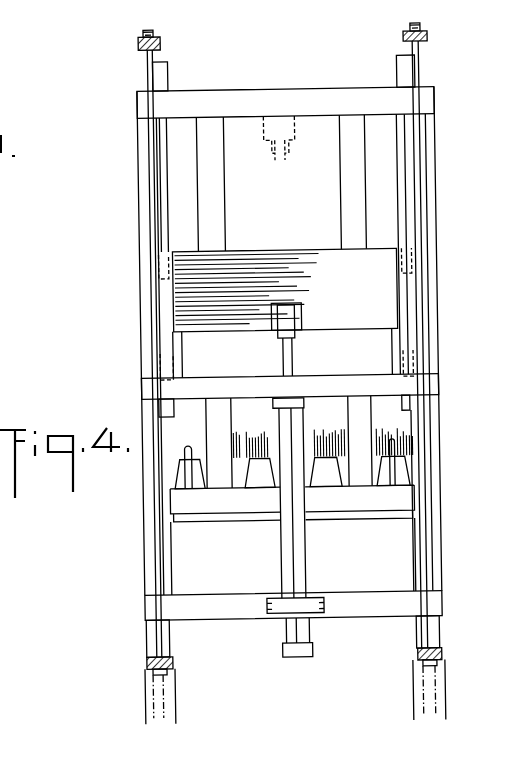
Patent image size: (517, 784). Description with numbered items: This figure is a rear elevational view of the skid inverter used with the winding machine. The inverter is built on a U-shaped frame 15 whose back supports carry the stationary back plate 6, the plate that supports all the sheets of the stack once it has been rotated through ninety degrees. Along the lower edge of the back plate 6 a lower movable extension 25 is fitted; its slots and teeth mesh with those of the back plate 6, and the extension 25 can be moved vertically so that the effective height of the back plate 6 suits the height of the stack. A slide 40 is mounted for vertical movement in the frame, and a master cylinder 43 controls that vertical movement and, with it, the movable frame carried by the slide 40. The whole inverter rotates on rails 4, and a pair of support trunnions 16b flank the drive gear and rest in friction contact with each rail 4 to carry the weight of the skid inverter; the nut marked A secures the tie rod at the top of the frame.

The nut A is at (161, 42).
The rails 4 is at (404, 39).
The U-shaped frame 15 is at (289, 100).
The slide 40 is at (290, 262).
The back plate 6 is at (395, 425).
The lower movable extension 25 is at (395, 498).
The master cylinder 43 is at (300, 630).
The support trunnions 16b is at (178, 695).